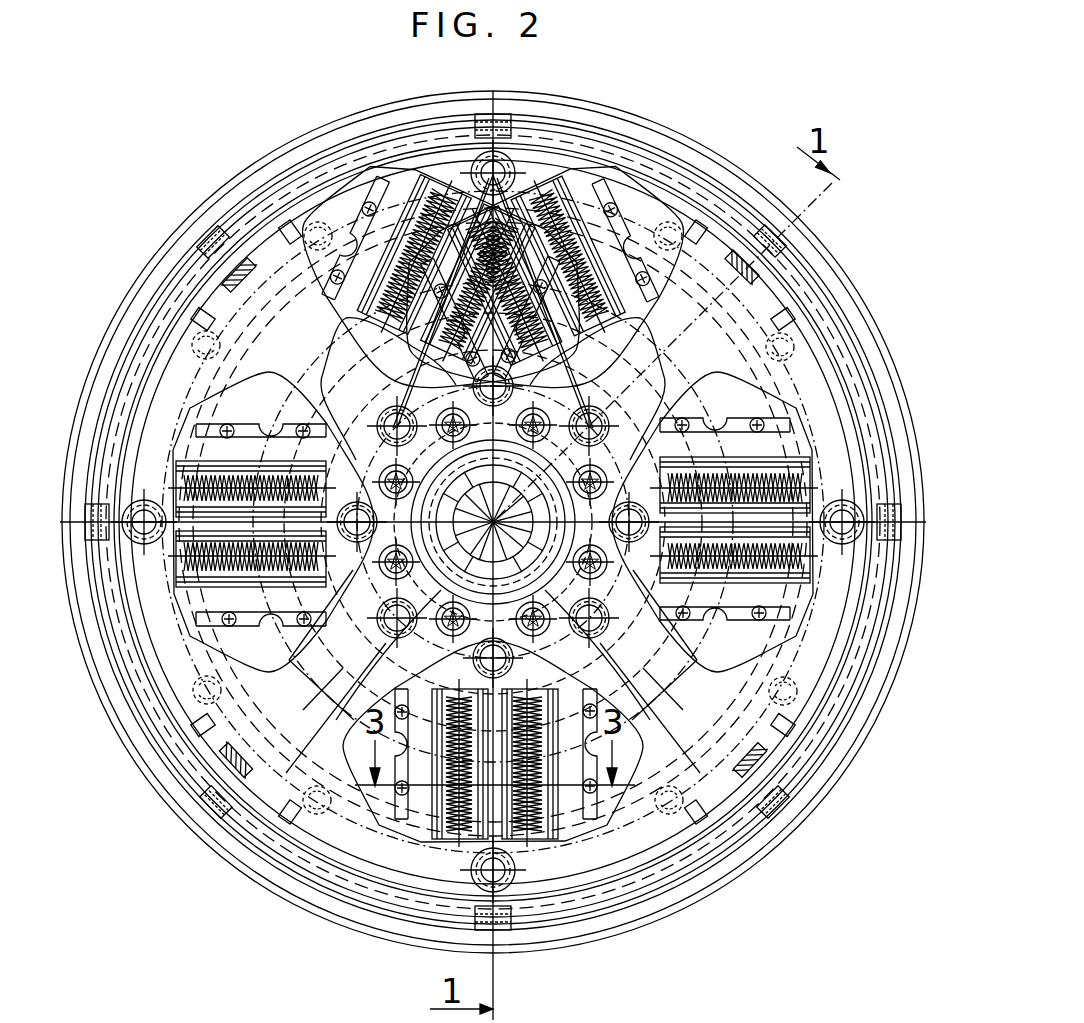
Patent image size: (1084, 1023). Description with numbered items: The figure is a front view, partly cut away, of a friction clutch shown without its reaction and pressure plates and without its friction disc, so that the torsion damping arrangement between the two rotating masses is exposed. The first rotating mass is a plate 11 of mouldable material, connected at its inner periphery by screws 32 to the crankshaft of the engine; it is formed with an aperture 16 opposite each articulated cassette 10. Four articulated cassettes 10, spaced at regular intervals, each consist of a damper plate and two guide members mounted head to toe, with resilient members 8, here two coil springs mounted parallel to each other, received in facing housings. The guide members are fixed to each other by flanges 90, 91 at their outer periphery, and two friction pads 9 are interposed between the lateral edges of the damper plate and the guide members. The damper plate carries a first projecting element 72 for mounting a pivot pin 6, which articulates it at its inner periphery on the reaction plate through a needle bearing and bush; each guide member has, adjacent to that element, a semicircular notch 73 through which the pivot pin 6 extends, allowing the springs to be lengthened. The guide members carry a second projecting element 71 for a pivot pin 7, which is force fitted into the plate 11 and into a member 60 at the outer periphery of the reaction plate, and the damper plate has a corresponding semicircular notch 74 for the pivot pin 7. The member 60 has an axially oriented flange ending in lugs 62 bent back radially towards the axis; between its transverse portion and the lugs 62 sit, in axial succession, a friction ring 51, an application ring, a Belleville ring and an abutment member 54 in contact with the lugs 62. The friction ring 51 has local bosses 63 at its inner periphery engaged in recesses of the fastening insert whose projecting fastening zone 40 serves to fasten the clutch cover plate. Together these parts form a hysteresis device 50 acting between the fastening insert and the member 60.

The pivot pin 6 is at (470, 688).
The pivot pin 7 is at (505, 884).
The resilient members 8 is at (517, 680).
The friction pads 9 is at (630, 882).
The articulated cassette 10 is at (560, 890).
The plate 11 is at (800, 372).
The aperture 16 is at (295, 625).
The screws 32 is at (765, 830).
The fastening zone 40 is at (723, 243).
The hysteresis device 50 is at (662, 160).
The friction ring 51 is at (202, 287).
The abutment member 54 is at (260, 207).
The member 60 is at (323, 213).
The lugs 62 is at (810, 808).
The local bosses 63 is at (170, 360).
The second projecting element 71 is at (513, 862).
The first projecting element 72 is at (340, 650).
The notch 73 is at (318, 580).
The notch 74 is at (520, 880).
The flange 90 is at (655, 893).
The flange 91 is at (493, 539).